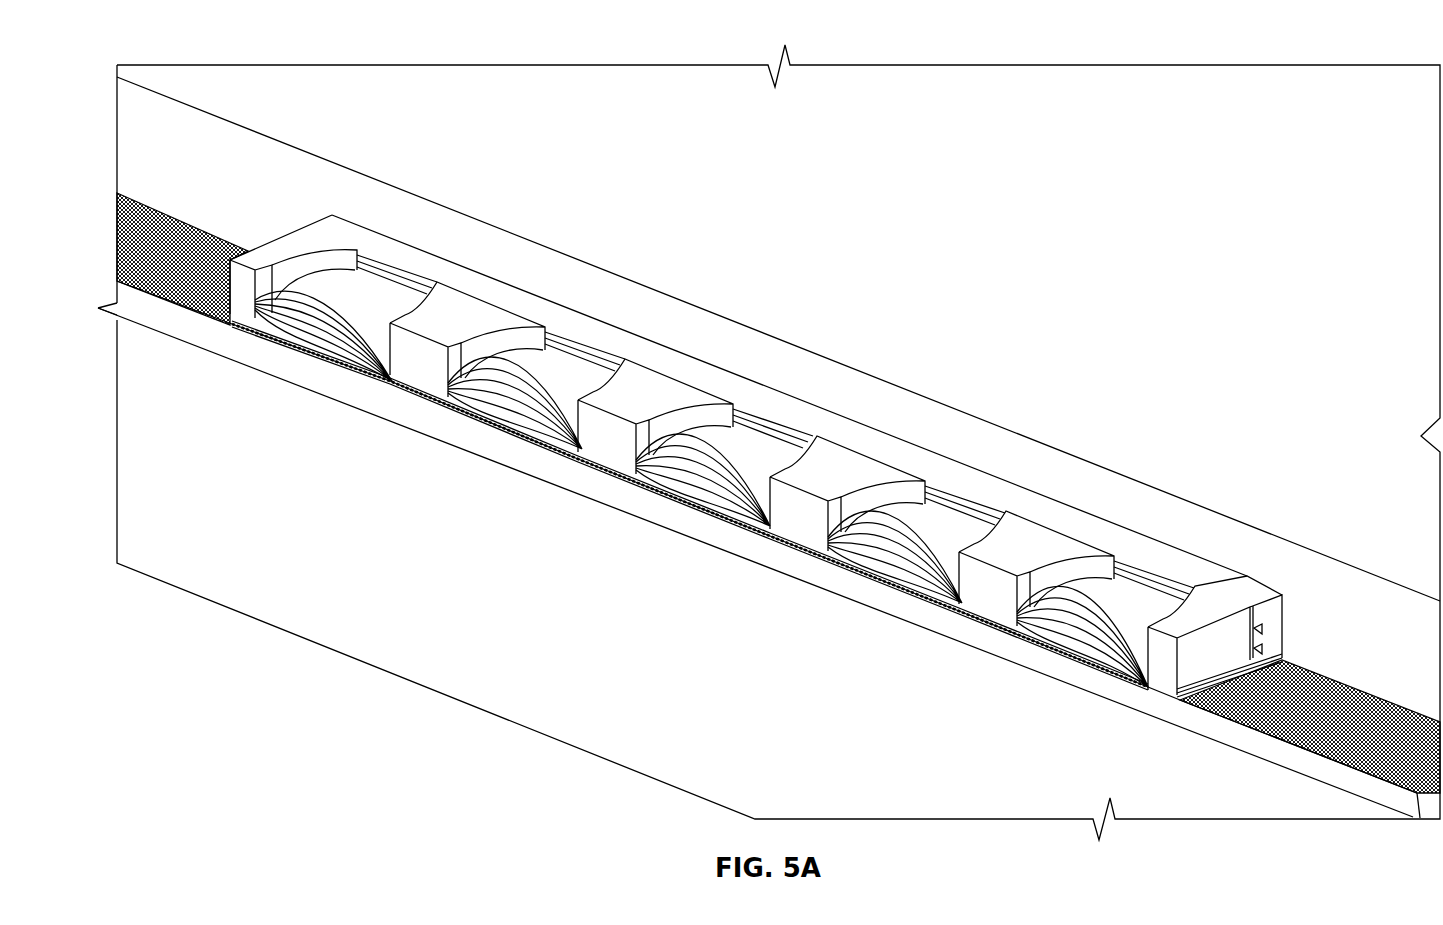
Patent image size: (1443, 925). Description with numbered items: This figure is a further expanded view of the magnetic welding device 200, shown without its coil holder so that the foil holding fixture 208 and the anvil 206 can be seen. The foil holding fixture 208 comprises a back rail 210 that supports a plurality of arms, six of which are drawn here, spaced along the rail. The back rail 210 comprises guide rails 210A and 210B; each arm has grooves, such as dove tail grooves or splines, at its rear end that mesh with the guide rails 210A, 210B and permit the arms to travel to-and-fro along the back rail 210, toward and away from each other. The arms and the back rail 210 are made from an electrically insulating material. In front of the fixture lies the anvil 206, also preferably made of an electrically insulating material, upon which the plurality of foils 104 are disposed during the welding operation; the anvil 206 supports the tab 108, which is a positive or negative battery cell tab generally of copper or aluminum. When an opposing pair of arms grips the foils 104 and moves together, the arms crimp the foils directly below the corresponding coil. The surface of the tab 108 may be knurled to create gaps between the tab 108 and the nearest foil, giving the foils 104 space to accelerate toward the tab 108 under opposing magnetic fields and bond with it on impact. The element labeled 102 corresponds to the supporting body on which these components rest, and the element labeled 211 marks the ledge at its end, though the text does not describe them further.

The device 200 is at (166, 44).
The substrate board 102 is at (1101, 85).
The foils 104 is at (1162, 607).
The tab 108 is at (167, 310).
The anvil 206 is at (512, 652).
The foil holding fixture 208 is at (1232, 641).
The back rail 210 is at (1138, 548).
The guide rail 210A is at (340, 247).
The guide rail 210B is at (410, 290).
The end ledge 211 is at (1267, 747).